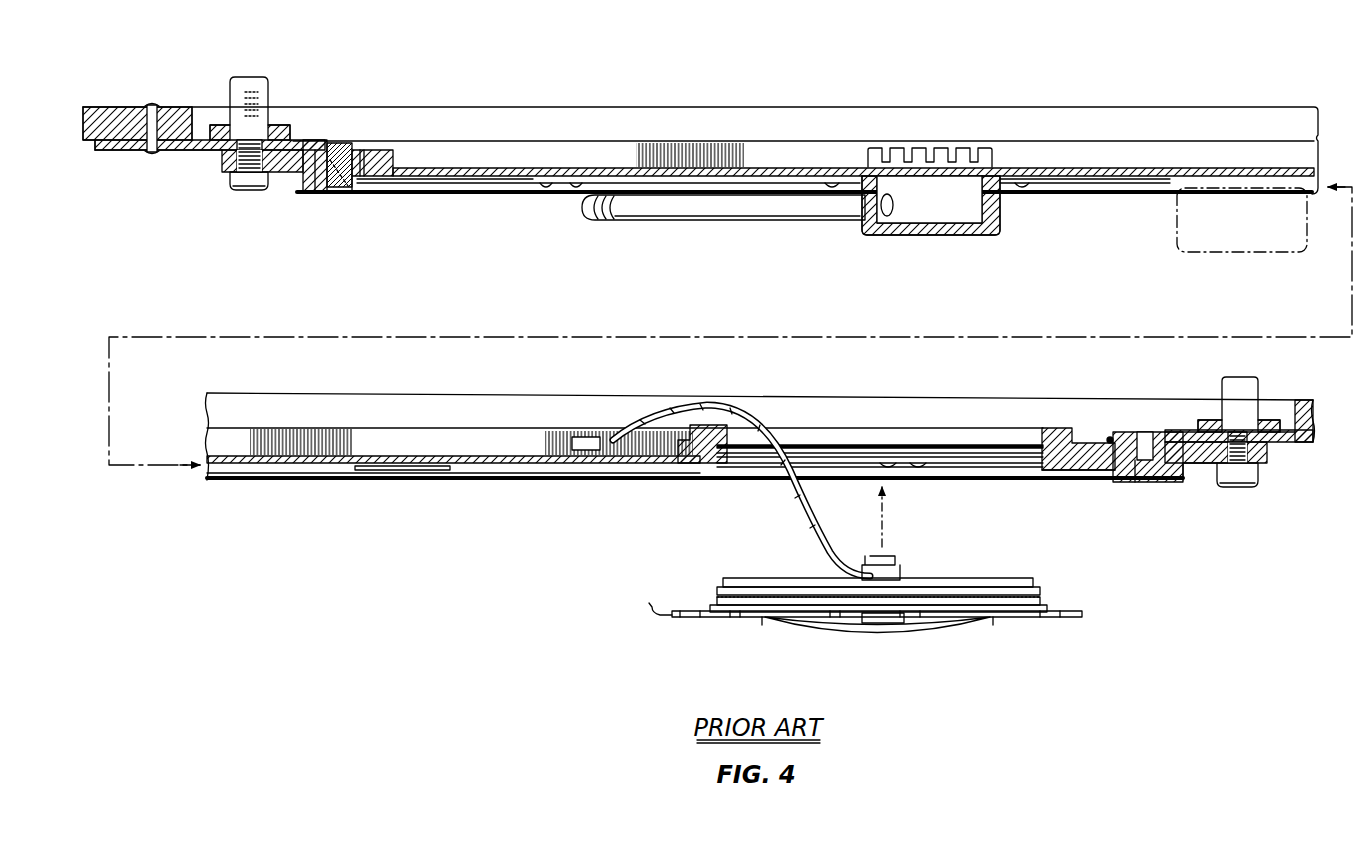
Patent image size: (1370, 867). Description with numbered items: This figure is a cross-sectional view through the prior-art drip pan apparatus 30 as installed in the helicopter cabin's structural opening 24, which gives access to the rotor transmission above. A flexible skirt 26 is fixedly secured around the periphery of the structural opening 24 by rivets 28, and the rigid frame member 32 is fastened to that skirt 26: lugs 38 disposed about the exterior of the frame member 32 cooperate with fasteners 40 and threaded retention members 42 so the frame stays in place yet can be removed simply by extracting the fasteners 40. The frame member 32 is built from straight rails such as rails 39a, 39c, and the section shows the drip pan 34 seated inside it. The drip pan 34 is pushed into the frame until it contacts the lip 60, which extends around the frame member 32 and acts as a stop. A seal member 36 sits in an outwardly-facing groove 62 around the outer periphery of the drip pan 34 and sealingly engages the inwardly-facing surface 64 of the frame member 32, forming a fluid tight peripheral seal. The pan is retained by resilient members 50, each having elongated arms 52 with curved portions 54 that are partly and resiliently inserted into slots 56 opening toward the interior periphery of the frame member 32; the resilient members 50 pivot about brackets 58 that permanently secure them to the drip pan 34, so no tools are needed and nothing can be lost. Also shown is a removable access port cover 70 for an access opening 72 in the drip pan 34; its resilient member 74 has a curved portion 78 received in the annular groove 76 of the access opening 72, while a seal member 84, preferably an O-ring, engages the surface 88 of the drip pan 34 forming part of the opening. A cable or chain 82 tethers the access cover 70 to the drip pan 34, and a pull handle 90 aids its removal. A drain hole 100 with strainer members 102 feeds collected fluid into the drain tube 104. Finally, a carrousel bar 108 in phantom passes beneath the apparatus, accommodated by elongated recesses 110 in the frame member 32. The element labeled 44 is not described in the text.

The structural opening 24 is at (178, 120).
The flexible skirt 26 is at (178, 152).
The rivets 28 is at (153, 104).
The drip pan apparatus 30 is at (288, 500).
The frame member 32 is at (296, 196).
The drip pan 34 is at (1078, 166).
The seal member 36 is at (358, 193).
The lugs 38 is at (220, 174).
The rail 39a is at (1140, 484).
The rail 39c is at (320, 192).
The fasteners 40 is at (248, 192).
The threaded retention members 42 is at (267, 97).
The end plate 44 is at (1164, 428).
The resilient members 50 is at (495, 194).
The elongated arms 52 is at (465, 183).
The curved portions 54 is at (396, 181).
The slots 56 is at (336, 196).
The brackets 58 is at (564, 187).
The lip 60 is at (357, 150).
The outwardly-facing groove 62 is at (384, 150).
The inwardly-facing surface 64 is at (336, 143).
The access port covers 70 is at (1052, 593).
The access openings 72 is at (872, 428).
The resilient member 74 is at (710, 622).
The annular groove 76 is at (1020, 446).
The curved portion 78 is at (652, 610).
The cable or chain 82 is at (788, 516).
The seal member 84 is at (706, 594).
The surface 88 is at (940, 432).
The pull handles 90 is at (930, 632).
The drain hole 100 is at (1000, 154).
The strainer members 102 is at (946, 148).
The drain tube 104 is at (684, 210).
The carrousel bar 108 is at (1218, 254).
The elongated recesses 110 is at (1204, 196).